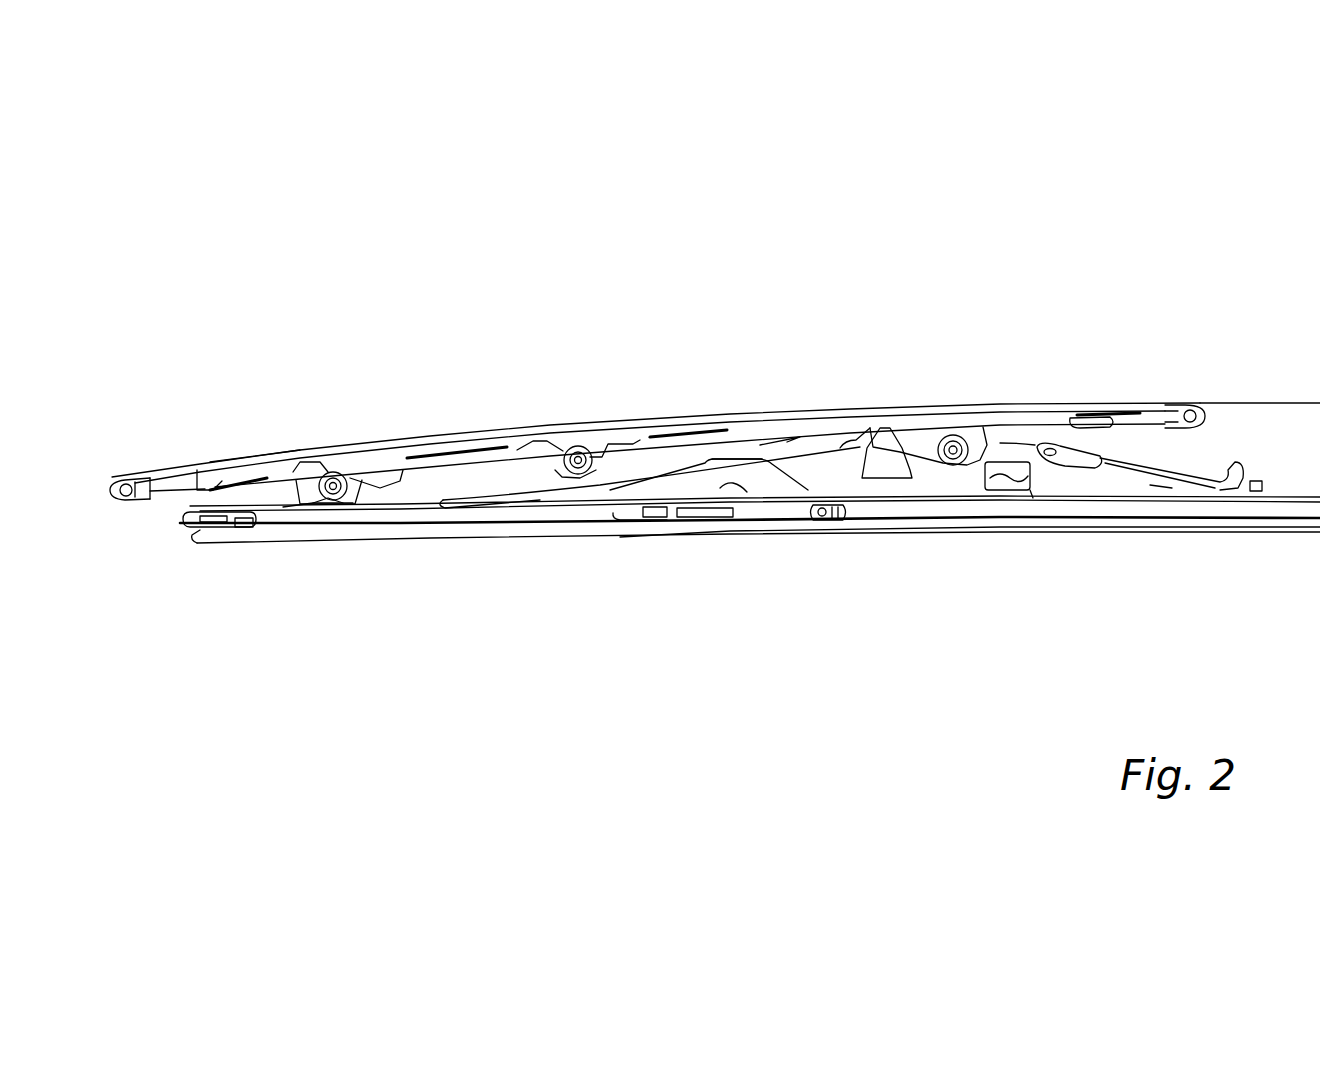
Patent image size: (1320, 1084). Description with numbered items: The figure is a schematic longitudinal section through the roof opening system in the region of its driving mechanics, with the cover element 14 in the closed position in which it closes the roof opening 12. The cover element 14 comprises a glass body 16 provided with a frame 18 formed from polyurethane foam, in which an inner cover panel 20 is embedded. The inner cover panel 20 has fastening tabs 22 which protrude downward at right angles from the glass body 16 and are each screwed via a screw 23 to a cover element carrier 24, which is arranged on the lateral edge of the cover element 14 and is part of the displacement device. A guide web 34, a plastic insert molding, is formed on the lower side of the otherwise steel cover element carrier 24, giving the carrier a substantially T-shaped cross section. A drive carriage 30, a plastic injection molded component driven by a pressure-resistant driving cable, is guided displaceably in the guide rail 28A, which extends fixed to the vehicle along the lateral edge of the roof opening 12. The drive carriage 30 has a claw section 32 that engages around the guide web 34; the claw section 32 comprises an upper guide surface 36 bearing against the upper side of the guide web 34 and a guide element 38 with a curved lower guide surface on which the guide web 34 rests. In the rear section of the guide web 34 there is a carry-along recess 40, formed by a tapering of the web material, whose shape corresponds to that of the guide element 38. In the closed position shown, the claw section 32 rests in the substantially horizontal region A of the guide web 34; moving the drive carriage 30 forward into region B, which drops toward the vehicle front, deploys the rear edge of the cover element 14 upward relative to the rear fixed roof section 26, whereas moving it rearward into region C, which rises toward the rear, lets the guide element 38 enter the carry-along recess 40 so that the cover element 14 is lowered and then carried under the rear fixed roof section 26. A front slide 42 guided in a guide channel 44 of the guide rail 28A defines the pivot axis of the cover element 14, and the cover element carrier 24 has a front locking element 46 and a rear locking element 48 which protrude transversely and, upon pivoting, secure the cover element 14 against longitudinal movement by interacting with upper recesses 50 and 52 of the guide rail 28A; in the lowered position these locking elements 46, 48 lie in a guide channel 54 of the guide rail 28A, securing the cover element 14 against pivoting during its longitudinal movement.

The roof opening 12 is at (1198, 407).
The cover element 14 is at (1000, 400).
The glass body 16 is at (223, 457).
The frame 18 is at (136, 466).
The inner cover panel 20 is at (198, 490).
The fastening tabs 22 is at (358, 475).
The screw 23 is at (328, 472).
The cover element carrier 24 is at (787, 442).
The rear fixed roof section 26 is at (1257, 403).
The guide rail 28A is at (983, 528).
The drive carriage 30 is at (795, 483).
The claw section 32 is at (717, 486).
The guide web 34 is at (680, 482).
The upper guide surface 36 is at (743, 470).
The guide element 38 is at (743, 488).
The carry-along recess 40 is at (850, 460).
The front slide 42 is at (225, 540).
The guide channel 44 is at (280, 540).
The front locking element 46 is at (313, 517).
The rear locking element 48 is at (1030, 487).
The upper recess 50 is at (347, 517).
The upper recess 52 is at (993, 490).
The guide channel 54 is at (407, 530).
The region A is at (757, 480).
The region B is at (507, 513).
The region C is at (838, 465).